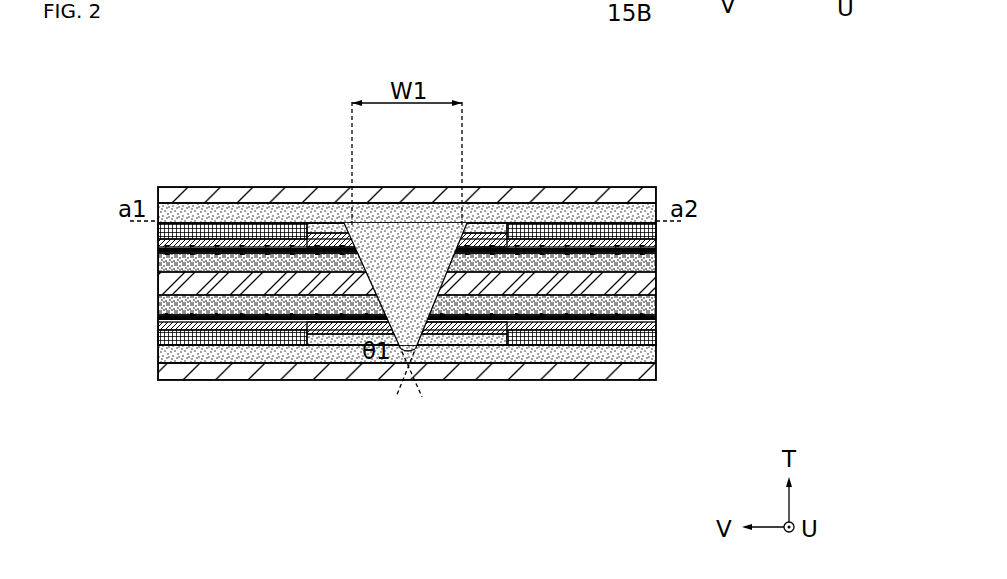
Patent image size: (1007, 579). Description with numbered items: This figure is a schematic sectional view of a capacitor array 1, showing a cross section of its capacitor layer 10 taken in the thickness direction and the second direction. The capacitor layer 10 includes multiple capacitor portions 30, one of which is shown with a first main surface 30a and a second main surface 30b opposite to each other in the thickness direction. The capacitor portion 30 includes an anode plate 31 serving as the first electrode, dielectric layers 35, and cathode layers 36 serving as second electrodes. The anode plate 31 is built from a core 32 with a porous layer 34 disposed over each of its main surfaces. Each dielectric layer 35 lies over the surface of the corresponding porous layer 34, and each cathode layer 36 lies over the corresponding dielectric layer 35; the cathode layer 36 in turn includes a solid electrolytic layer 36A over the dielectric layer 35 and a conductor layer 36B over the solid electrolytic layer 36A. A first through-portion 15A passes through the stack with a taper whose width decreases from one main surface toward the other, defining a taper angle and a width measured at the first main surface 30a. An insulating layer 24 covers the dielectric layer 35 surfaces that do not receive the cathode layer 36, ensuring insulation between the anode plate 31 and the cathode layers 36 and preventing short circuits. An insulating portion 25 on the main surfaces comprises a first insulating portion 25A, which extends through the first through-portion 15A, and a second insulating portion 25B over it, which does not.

The capacitor array 1 is at (461, 288).
The capacitor layer 10 is at (110, 186).
The first through-portion 15A is at (403, 277).
The insulating layer 24 is at (493, 242).
The insulating portion 25 is at (680, 120).
The first insulating portion 25A is at (574, 213).
The second insulating portion 25B is at (637, 193).
The capacitor portion 30 is at (810, 223).
The first main surface 30a is at (272, 230).
The second main surface 30b is at (272, 344).
The anode plate 31 is at (768, 285).
The core 32 is at (656, 283).
The porous layer 34 is at (656, 262).
The dielectric layer 35 is at (656, 250).
The cathode layer 36 is at (768, 213).
The solid electrolytic layer 36A is at (656, 243).
The conductor layer 36B is at (656, 231).